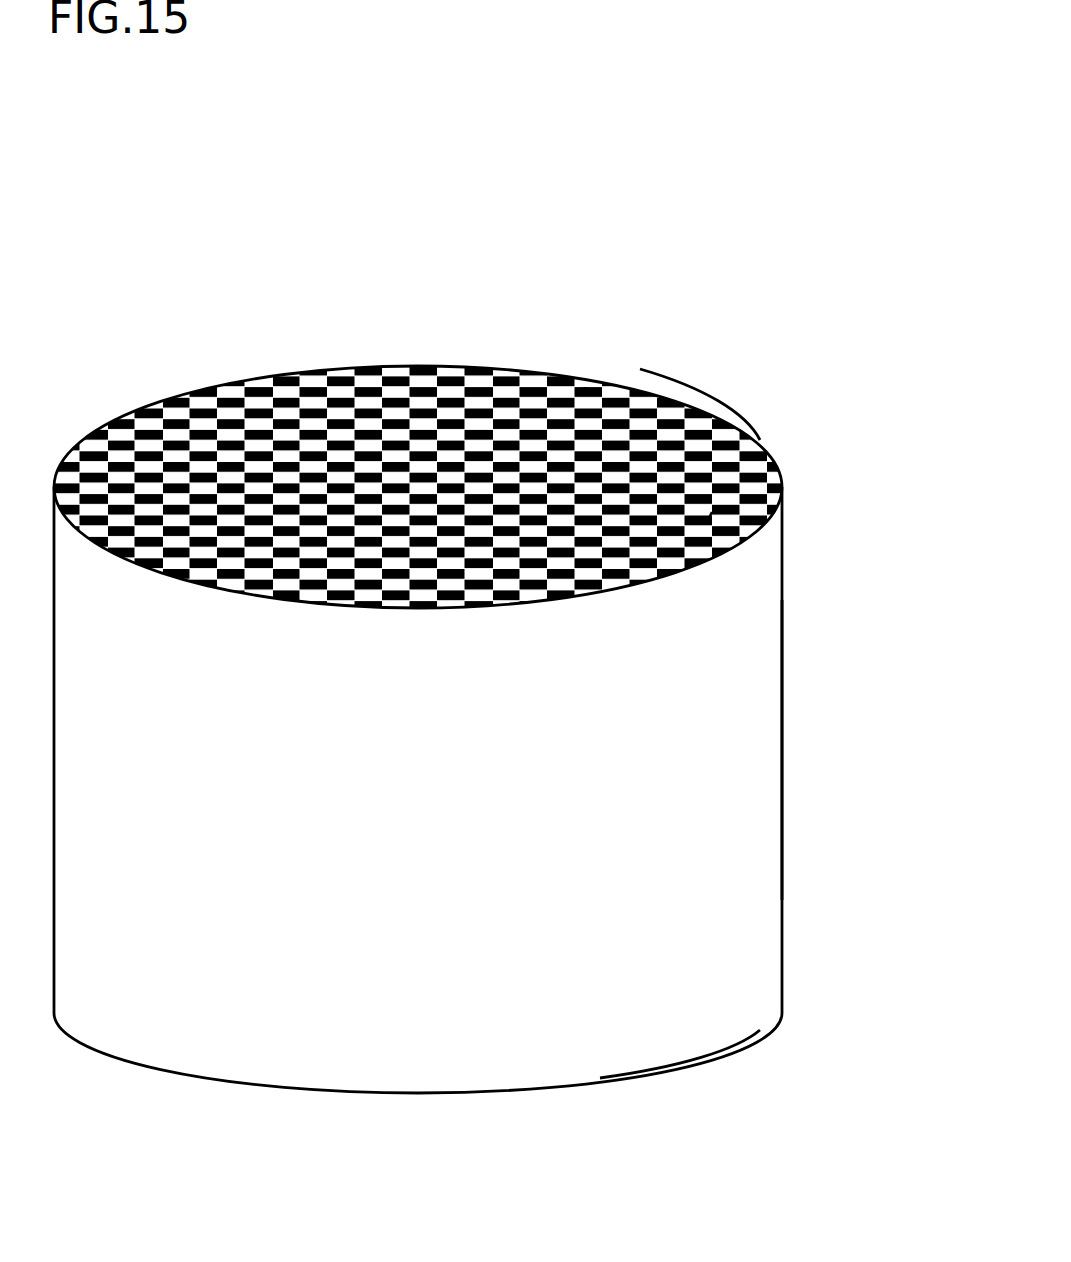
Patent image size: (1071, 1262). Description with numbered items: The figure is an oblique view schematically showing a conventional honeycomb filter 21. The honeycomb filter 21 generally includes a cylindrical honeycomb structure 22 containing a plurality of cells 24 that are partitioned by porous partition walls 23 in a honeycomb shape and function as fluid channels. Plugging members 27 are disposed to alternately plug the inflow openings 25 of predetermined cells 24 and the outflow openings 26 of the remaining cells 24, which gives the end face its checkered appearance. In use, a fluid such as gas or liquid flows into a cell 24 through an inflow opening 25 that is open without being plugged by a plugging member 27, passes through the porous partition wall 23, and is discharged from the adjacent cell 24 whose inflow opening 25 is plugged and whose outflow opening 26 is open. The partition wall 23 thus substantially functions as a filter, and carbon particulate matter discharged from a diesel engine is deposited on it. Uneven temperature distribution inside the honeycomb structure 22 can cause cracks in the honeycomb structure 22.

The honeycomb filter 21 is at (823, 182).
The honeycomb structure 22 is at (737, 774).
The partition wall 23 is at (702, 521).
The cell 24 is at (200, 400).
The inflow opening 25 is at (705, 407).
The outflow opening 26 is at (712, 1057).
The plugging member 27 is at (585, 392).